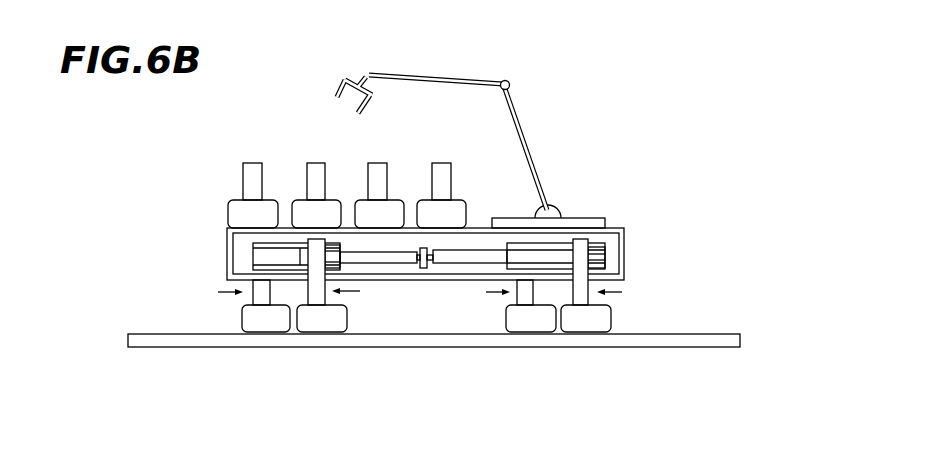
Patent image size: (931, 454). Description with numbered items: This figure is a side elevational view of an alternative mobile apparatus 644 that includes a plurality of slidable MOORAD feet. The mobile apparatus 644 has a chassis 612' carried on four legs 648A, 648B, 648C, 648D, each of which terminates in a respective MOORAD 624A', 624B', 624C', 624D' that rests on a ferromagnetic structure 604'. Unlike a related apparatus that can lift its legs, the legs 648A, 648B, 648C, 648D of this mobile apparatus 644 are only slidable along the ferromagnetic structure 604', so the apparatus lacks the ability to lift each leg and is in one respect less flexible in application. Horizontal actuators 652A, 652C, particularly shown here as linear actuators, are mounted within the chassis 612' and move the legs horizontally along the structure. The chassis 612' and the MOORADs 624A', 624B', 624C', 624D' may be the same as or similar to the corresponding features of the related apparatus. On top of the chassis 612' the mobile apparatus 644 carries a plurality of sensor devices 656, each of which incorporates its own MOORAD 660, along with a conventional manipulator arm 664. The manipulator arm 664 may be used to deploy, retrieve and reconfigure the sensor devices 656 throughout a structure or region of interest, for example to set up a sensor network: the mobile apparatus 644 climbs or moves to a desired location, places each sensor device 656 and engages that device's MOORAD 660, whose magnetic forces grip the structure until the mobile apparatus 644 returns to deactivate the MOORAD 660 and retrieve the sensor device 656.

The ferromagnetic structure 604' is at (434, 372).
The chassis 612' is at (368, 254).
The MOORAD 624A' is at (331, 354).
The MOORAD 624B' is at (197, 318).
The MOORAD 624C' is at (609, 351).
The MOORAD 624D' is at (534, 355).
The mobile apparatus 644 is at (688, 213).
The leg 648A is at (327, 302).
The leg 648B is at (257, 302).
The leg 648C is at (587, 302).
The leg 648D is at (517, 300).
The horizontal actuator 652A is at (382, 253).
The horizontal actuator 652C is at (477, 253).
The sensor device 656 is at (243, 178).
The MOORAD 660 is at (228, 207).
The manipulator arm 664 is at (541, 132).